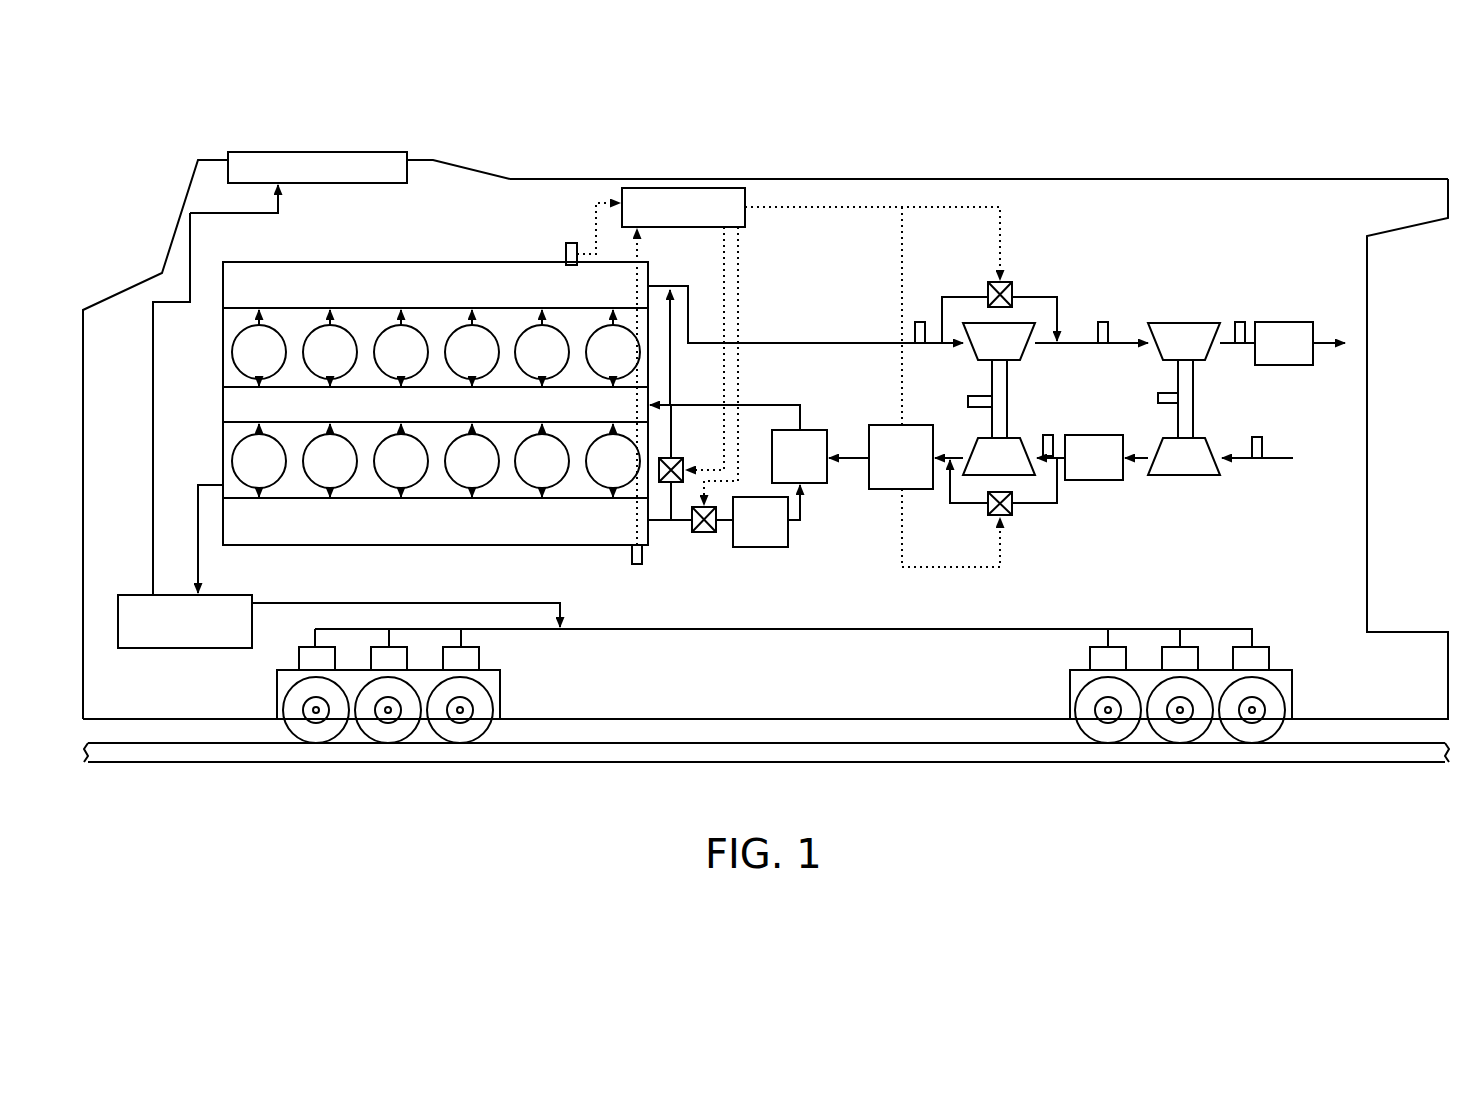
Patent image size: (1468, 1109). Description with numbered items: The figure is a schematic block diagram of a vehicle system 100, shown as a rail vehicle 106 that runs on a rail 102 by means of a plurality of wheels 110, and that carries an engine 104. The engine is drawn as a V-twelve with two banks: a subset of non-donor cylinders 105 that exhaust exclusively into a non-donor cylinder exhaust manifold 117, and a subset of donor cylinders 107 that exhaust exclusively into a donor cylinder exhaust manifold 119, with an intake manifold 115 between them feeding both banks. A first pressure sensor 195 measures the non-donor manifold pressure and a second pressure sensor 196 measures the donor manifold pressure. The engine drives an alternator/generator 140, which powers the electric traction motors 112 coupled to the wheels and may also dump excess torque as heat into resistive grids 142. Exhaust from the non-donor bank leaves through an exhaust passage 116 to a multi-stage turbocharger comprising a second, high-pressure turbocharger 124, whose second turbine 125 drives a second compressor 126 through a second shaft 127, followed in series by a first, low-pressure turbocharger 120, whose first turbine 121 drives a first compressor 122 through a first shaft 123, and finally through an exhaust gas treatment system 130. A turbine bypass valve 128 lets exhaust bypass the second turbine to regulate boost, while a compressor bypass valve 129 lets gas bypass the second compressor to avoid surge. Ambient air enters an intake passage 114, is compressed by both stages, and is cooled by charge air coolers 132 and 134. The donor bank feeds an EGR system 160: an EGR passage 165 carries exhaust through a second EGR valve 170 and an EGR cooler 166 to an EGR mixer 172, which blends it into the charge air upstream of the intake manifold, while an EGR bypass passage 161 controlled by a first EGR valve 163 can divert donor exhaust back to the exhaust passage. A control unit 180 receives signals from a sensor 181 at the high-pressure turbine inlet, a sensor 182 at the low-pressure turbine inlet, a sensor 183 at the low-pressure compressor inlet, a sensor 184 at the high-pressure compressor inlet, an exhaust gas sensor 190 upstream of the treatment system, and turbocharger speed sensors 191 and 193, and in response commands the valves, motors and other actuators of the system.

The vehicle system 100 is at (1262, 150).
The rail 102 is at (1362, 763).
The engine 104 is at (435, 388).
The non-donor cylinders 105 is at (330, 330).
The rail vehicle 106 is at (1108, 179).
The donor cylinders 107 is at (401, 489).
The wheels 110 is at (482, 700).
The electric traction motors 112 is at (482, 668).
The intake passage 114 is at (770, 405).
The intake manifold 115 is at (435, 404).
The exhaust passage 116 is at (822, 343).
The non-donor cylinder exhaust manifold 117 is at (435, 292).
The donor cylinder exhaust manifold 119 is at (435, 518).
The first turbocharger 120 is at (1194, 426).
The first turbine 121 is at (1184, 341).
The first compressor 122 is at (1184, 456).
The first shaft 123 is at (1194, 418).
The second turbocharger 124 is at (1041, 404).
The second turbine 125 is at (999, 341).
The second compressor 126 is at (985, 456).
The second shaft 127 is at (1008, 415).
The turbine bypass valve 128 is at (1012, 292).
The compressor bypass valve 129 is at (988, 510).
The exhaust gas treatment system 130 is at (1282, 343).
The charge air cooler 132 is at (1092, 457).
The charge air cooler 134 is at (881, 457).
The alternator/generator 140 is at (339, 566).
The resistive grids 142 is at (387, 150).
The EGR system 160 is at (973, 451).
The EGR bypass passage 161 is at (670, 395).
The first EGR valve 163 is at (683, 465).
The EGR passage 165 is at (680, 532).
The EGR cooler 166 is at (766, 516).
The second EGR valve 170 is at (710, 535).
The EGR mixer 172 is at (799, 456).
The control unit 180 is at (811, 377).
The sensor 181 is at (920, 322).
The sensor 182 is at (1103, 322).
The sensor 183 is at (1257, 437).
The sensor 184 is at (1048, 435).
The exhaust gas sensor 190 is at (1240, 322).
The speed sensor 191 is at (968, 400).
The speed sensor 193 is at (1158, 397).
The first pressure sensor 195 is at (571, 243).
The second pressure sensor 196 is at (636, 565).